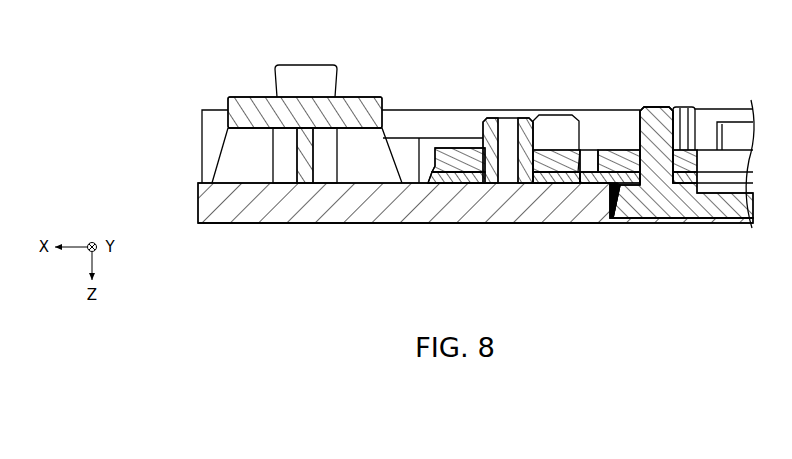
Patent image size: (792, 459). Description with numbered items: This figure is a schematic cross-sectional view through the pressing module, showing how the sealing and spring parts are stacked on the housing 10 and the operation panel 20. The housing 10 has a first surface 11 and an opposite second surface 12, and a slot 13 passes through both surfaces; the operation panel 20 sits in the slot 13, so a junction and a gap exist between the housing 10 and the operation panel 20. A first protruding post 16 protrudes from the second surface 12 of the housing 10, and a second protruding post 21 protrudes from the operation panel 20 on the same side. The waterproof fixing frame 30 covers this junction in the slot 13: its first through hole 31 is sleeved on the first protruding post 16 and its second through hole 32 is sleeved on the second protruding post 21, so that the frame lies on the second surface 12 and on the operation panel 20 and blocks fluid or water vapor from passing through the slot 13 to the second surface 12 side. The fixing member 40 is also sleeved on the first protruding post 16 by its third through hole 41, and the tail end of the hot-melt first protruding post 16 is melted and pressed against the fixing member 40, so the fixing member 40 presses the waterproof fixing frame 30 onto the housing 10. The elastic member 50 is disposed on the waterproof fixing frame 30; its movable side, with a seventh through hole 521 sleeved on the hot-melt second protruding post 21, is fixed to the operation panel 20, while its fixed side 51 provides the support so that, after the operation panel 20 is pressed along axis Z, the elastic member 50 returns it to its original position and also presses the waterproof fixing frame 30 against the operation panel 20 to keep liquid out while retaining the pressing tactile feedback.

The housing 10 is at (199, 201).
The first surface 11 is at (216, 227).
The second surface 12 is at (218, 181).
The slot 13 is at (618, 222).
The first protruding post 16 is at (507, 122).
The operation panel 20 is at (651, 217).
The second protruding post 21 is at (653, 108).
The waterproof fixing frame 30 is at (577, 182).
The first through hole 31 is at (543, 185).
The second through hole 32 is at (681, 192).
The fixing member 40 is at (553, 150).
The third through hole 41 is at (465, 146).
The elastic member 50 is at (617, 150).
The fixed side 51 is at (366, 112).
The seventh through hole 521 is at (688, 108).